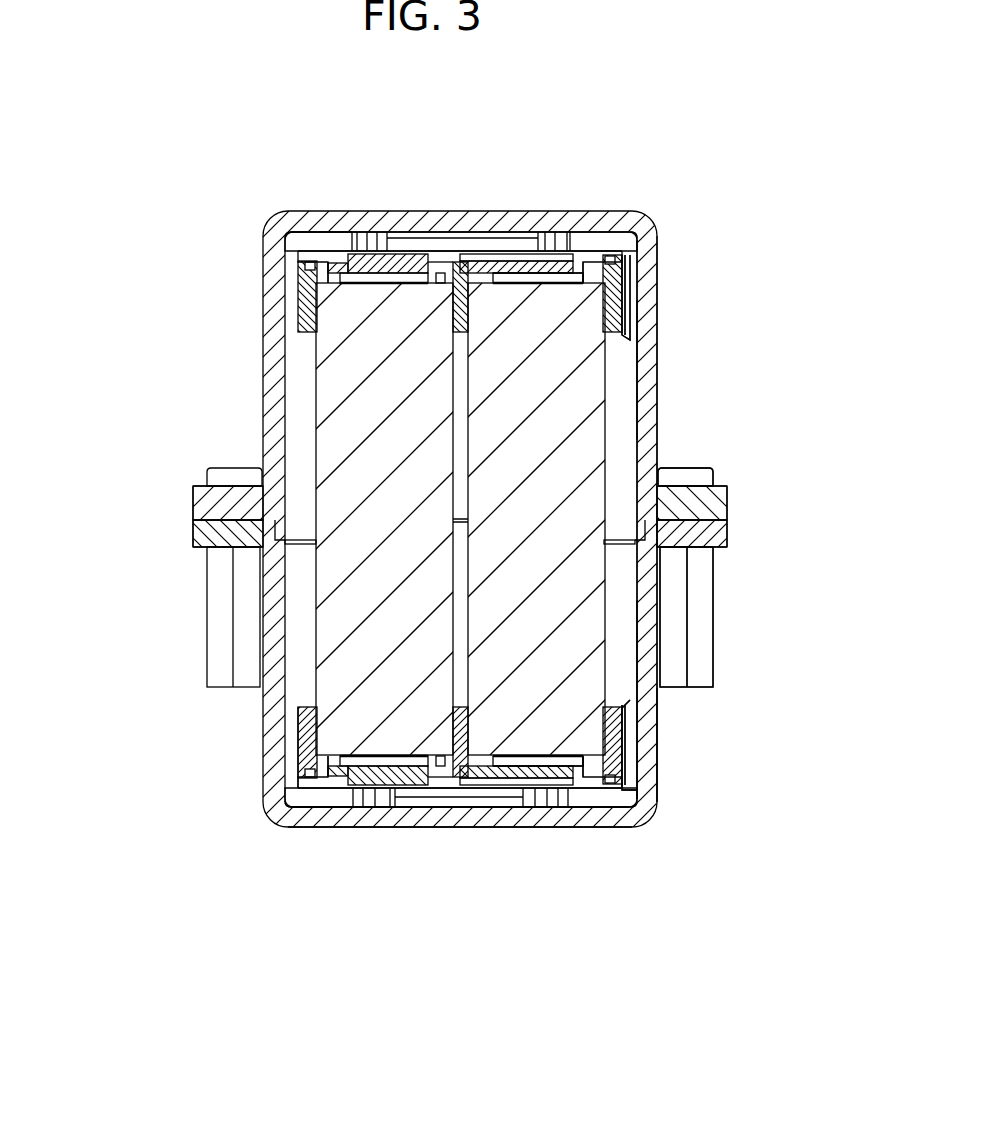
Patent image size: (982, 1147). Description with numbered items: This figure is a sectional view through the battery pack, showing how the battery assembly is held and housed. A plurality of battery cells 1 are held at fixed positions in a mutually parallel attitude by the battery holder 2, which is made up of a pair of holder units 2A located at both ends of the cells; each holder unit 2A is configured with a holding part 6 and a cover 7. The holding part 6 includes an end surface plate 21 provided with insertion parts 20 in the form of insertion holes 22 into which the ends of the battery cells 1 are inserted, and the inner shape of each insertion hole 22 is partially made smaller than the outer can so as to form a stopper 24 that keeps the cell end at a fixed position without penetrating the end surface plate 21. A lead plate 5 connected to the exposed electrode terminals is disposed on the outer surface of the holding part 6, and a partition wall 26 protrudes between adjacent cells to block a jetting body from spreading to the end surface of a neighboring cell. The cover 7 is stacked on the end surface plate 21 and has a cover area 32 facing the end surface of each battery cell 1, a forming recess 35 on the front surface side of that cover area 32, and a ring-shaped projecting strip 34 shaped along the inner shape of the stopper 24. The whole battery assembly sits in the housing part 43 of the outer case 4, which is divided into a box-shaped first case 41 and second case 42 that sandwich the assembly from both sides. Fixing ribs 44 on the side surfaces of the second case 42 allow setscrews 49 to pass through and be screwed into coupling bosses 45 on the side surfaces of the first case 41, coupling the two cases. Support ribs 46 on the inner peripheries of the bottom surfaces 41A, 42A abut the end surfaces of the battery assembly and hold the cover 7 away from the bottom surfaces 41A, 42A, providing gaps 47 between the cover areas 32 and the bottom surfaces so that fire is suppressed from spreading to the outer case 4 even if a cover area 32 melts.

The battery cell 1 is at (340, 415).
The battery holder 2 is at (95, 203).
The holder unit 2A is at (160, 143).
The outer case 4 is at (828, 338).
The lead plate 5 is at (510, 260).
The holding part 6 is at (285, 283).
The cover 7 is at (312, 255).
The insertion part 20 is at (630, 303).
The end surface plate 21 is at (297, 723).
The insertion hole 22 is at (629, 522).
The stopper 24 is at (348, 265).
The partition wall 26 is at (458, 262).
The cover area 32 is at (420, 270).
The ring-shaped projecting strip 34 is at (390, 275).
The forming recess 35 is at (428, 243).
The first case 41 is at (650, 712).
The bottom surface of first case 41A is at (362, 815).
The second case 42 is at (652, 373).
The bottom surface of second case 42A is at (551, 216).
The housing part 43 is at (623, 368).
The fixing rib 44 is at (690, 493).
The coupling boss 45 is at (698, 638).
The support rib 46 is at (598, 237).
The gap 47 is at (487, 797).
The setscrew 49 is at (673, 467).